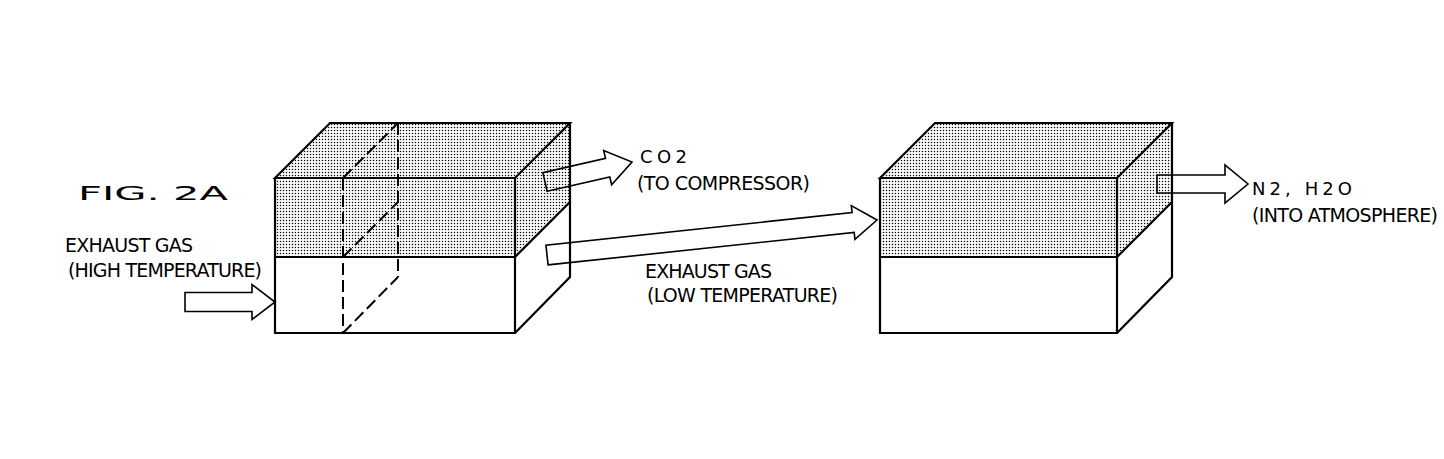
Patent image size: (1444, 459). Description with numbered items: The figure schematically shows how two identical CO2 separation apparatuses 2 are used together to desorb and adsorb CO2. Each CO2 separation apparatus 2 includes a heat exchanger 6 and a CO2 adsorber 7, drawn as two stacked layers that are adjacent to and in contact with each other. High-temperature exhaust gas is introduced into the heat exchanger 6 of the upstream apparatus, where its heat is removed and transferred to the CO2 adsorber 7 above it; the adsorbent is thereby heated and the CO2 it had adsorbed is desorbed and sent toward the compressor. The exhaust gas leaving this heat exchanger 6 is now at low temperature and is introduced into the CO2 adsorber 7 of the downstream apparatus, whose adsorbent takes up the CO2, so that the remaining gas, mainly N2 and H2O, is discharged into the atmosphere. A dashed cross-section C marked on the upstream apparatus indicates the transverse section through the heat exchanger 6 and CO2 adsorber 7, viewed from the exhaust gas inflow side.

The CO2 separation apparatus 2 is at (736, 218).
The CO2 adsorber 7 is at (495, 122).
The heat exchanger 6 is at (420, 334).
The cross-section C is at (397, 122).